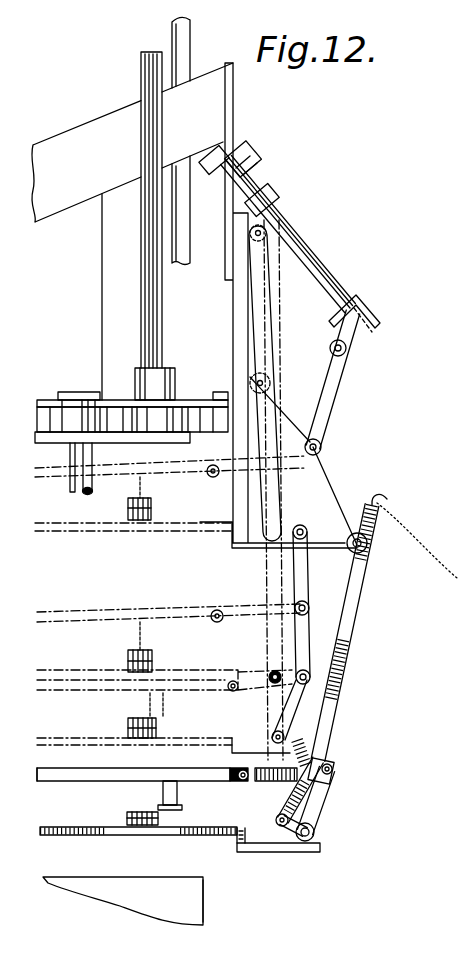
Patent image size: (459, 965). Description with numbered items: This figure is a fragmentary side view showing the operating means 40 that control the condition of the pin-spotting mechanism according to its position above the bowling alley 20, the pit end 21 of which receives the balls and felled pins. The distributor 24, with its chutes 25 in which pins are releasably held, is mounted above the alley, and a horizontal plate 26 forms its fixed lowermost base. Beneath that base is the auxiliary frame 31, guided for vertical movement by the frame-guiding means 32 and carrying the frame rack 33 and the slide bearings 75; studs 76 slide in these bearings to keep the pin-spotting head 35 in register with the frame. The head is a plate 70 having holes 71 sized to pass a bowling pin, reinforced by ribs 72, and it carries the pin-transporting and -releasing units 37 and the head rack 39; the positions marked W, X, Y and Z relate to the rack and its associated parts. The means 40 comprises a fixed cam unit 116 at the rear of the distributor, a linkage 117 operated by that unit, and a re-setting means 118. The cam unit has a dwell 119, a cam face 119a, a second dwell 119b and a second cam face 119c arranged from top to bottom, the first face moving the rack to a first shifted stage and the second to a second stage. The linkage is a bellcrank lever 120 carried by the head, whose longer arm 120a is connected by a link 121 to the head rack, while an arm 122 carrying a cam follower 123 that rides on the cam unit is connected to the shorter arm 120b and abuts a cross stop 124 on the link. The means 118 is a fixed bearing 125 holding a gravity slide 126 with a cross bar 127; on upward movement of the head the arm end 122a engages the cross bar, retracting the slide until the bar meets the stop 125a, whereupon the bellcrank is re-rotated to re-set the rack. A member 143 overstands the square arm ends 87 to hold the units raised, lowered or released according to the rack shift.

The bowling alley 20 is at (114, 878).
The pit end 21 is at (206, 890).
The distributor 24 is at (88, 126).
The chutes 25 is at (102, 298).
The horizontal plate 26 is at (44, 398).
The auxiliary frame 31 is at (216, 396).
The frame-guiding means 32 is at (140, 261).
The frame rack 33 is at (143, 440).
The pin-spotting head 35 is at (146, 530).
The pin-transporting and -releasing units 37 is at (446, 261).
The head rack 39 is at (180, 476).
The rack-shifting means 40 is at (348, 694).
The plate 70 is at (82, 826).
The holes 71 is at (146, 830).
The ribs 72 is at (236, 845).
The slide bearings 75 is at (68, 440).
The studs 76 is at (70, 484).
The square-ended arm ends 87 is at (128, 728).
The fixed cam unit 116 is at (327, 500).
The linkage 117 is at (342, 786).
The re-setting means 118 is at (348, 287).
The dwell 119 is at (252, 308).
The cam face 119a is at (276, 416).
The second dwell 119b is at (322, 462).
The second cam face 119c is at (376, 503).
The bellcrank lever 120 is at (320, 830).
The longer arm 120a is at (326, 795).
The shorter arm 120b is at (263, 850).
The link 121 is at (278, 782).
The arm 122 is at (270, 323).
The arm end 122a is at (366, 326).
The cam follower 123 is at (288, 212).
The cross stop 124 is at (334, 762).
The fixed bearing 125 is at (252, 153).
The stop 125a is at (270, 188).
The gravity slide 126 is at (300, 234).
The cross bar 127 is at (380, 318).
The member 143 is at (162, 718).
The rail W is at (182, 470).
The rail X is at (172, 610).
The rail Y is at (88, 680).
The rail Z is at (194, 775).